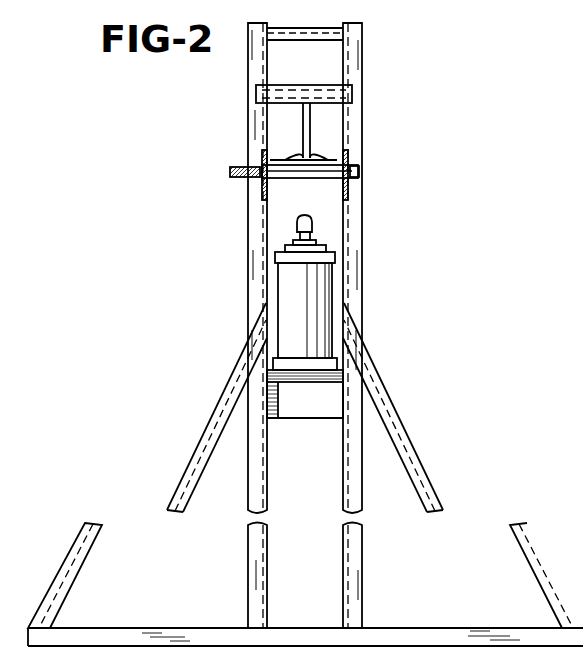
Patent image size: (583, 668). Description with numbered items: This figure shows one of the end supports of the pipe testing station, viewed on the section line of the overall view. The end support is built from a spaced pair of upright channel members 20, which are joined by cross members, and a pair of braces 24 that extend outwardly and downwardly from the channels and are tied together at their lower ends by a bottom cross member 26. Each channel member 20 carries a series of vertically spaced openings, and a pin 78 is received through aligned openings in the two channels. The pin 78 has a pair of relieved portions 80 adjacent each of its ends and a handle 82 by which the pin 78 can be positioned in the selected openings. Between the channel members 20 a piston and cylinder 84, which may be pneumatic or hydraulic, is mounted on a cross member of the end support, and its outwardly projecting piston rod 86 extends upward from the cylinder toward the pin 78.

The channel member 20 is at (248, 256).
The brace 24 is at (170, 507).
The bottom cross member 26 is at (160, 630).
The pin 78 is at (320, 165).
The relieved portion 80 is at (342, 175).
The handle 82 is at (230, 172).
The piston and cylinder 84 is at (288, 293).
The piston rod 86 is at (297, 225).